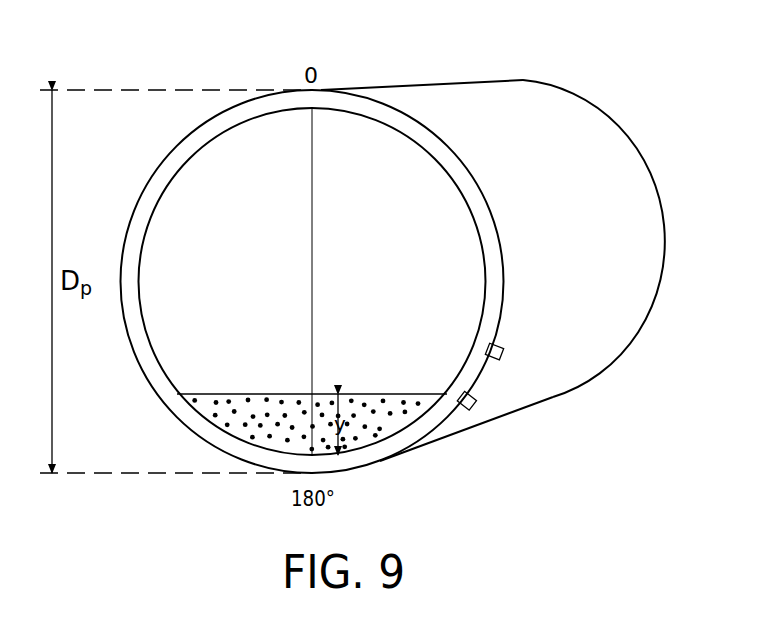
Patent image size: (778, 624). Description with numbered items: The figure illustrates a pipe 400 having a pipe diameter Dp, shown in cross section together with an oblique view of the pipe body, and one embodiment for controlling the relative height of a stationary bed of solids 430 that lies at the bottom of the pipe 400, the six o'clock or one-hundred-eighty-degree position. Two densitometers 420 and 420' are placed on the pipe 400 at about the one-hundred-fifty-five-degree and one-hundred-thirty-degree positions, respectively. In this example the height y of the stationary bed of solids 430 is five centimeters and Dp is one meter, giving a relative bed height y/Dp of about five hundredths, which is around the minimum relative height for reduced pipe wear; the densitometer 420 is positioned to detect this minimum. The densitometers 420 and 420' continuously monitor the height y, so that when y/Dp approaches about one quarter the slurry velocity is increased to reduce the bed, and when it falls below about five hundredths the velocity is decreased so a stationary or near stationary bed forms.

The pipe 400 is at (495, 110).
The densitometer 420 is at (514, 442).
The densitometer 420' is at (571, 392).
The stationary bed of solids 430 is at (267, 423).